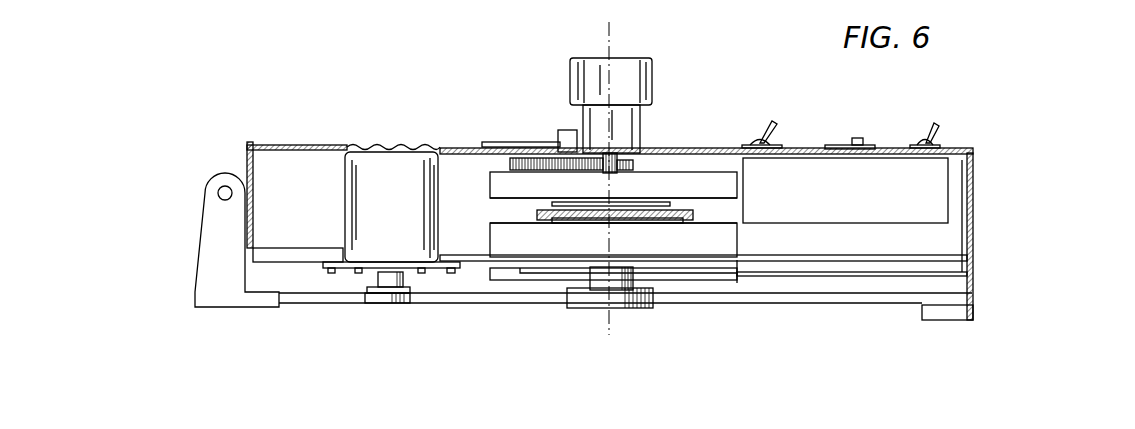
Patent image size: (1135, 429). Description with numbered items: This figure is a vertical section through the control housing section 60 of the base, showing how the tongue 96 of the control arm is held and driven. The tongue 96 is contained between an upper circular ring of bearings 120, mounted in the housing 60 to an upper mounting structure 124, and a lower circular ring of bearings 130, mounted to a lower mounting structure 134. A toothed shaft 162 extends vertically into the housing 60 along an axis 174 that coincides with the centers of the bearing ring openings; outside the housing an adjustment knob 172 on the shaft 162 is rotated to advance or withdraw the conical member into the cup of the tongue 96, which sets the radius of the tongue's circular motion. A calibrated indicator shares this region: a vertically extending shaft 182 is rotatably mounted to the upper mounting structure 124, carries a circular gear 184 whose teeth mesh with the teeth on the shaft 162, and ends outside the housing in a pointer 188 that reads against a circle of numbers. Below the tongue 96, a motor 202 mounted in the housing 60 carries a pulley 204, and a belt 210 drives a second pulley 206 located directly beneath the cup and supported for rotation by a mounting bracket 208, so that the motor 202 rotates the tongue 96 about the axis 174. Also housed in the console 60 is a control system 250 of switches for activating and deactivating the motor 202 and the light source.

The control housing section 60 is at (457, 147).
The tongue 96 is at (720, 215).
The upper circular ring of bearings 120 is at (662, 202).
The upper mounting structure 124 is at (723, 190).
The lower circular ring of bearings 130 is at (667, 225).
The lower mounting structure 134 is at (730, 247).
The shaft 162 is at (621, 148).
The adjustment knob 172 is at (645, 78).
The axis 174 is at (607, 332).
The vertically extending shaft 182 is at (558, 158).
The circular gear 184 is at (637, 167).
The pointer 188 is at (510, 140).
The motor 202 is at (388, 178).
The pulley 204 is at (382, 278).
The second pulley 206 is at (643, 307).
The mounting bracket 208 is at (733, 285).
The belt 210 is at (475, 295).
The control system 250 is at (822, 188).